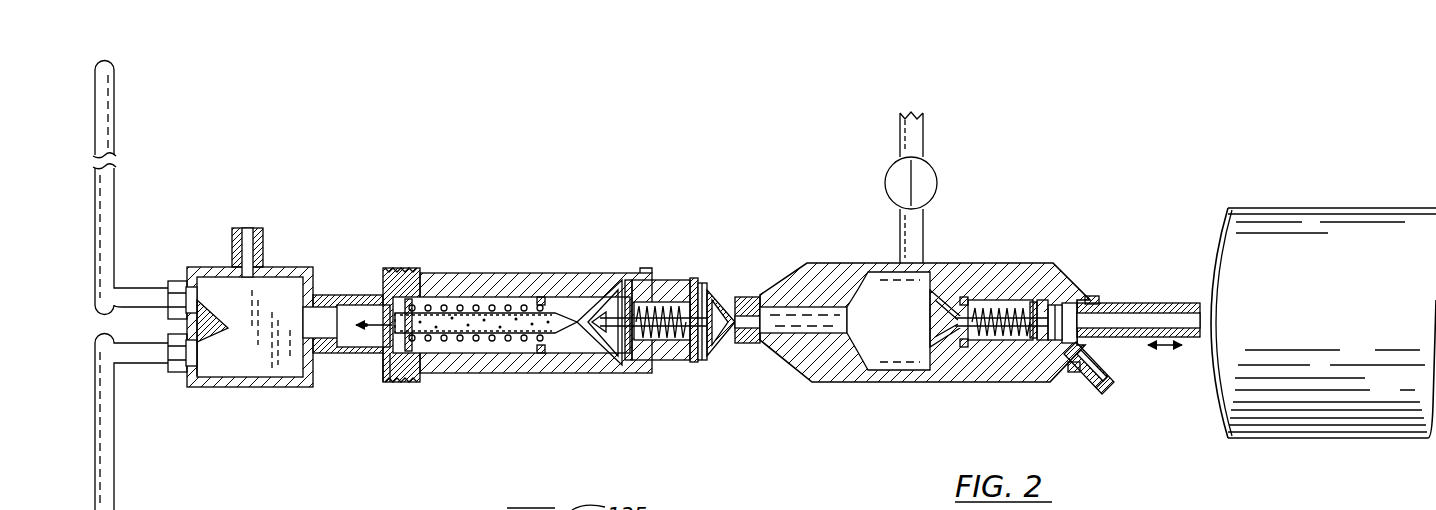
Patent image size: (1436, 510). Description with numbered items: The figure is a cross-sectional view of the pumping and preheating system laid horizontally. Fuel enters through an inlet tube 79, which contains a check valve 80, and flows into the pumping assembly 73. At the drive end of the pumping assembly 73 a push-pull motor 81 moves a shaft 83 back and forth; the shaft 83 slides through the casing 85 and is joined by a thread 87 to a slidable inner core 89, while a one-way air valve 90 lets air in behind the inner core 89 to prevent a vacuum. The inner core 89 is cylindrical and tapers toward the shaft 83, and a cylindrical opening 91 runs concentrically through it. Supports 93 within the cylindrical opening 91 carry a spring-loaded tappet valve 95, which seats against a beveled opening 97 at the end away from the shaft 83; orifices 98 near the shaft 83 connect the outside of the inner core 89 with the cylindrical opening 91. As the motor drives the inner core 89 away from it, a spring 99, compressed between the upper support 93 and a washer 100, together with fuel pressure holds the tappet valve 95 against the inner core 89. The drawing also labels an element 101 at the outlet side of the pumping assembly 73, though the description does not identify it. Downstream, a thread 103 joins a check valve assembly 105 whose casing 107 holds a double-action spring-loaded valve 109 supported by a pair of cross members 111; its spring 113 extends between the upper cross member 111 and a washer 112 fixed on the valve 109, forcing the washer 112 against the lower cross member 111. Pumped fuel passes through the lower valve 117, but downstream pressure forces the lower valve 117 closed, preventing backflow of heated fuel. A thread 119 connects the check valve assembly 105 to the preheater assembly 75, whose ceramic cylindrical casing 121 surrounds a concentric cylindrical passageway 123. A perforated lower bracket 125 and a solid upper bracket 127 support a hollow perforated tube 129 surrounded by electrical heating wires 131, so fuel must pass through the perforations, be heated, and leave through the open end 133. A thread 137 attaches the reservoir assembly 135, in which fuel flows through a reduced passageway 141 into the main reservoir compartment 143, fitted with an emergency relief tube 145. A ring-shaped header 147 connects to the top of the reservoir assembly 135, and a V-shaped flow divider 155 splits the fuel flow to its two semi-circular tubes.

The pumping assembly 73 is at (977, 279).
The preheater assembly 75 is at (491, 283).
The inlet tube 79 is at (900, 232).
The check valve 80 is at (938, 178).
The push-pull motor 81 is at (1330, 255).
The shaft 83 is at (1137, 340).
The casing 85 is at (1010, 385).
The thread 87 is at (1100, 302).
The slidable inner core 89 is at (1023, 310).
The one-way air valve 90 is at (1100, 385).
The cylindrical opening 91 is at (1010, 333).
The supports 93 is at (1058, 300).
The spring-loaded tappet valve 95 is at (935, 310).
The beveled opening 97 is at (935, 352).
The orifices 98 is at (1083, 295).
The spring 99 is at (995, 303).
The washer 100 is at (1033, 303).
The inlet passage 101 is at (793, 315).
The thread 103 is at (746, 298).
The check valve assembly 105 is at (699, 321).
The casing 107 is at (665, 280).
The double-action spring-loaded valve 109 is at (618, 320).
The cross members 111 is at (628, 362).
The washer 112 is at (683, 340).
The spring 113 is at (672, 333).
The lower valve 117 is at (728, 360).
The thread 119 is at (640, 276).
The cylindrical casing 121 is at (492, 277).
The cylindrical passageway 123 is at (460, 300).
The lower bracket 125 is at (537, 350).
The upper bracket 127 is at (410, 312).
The hollow perforated tube 129 is at (518, 310).
The electrical heating wires 131 is at (445, 337).
The open end 133 is at (385, 352).
The reservoir assembly 135 is at (242, 242).
The thread 137 is at (410, 383).
The passageway 141 is at (325, 300).
The main reservoir compartment 143 is at (215, 285).
The emergency relief tube 145 is at (258, 230).
The ring-shaped header 147 is at (116, 192).
The V-shaped flow divider 155 is at (205, 330).